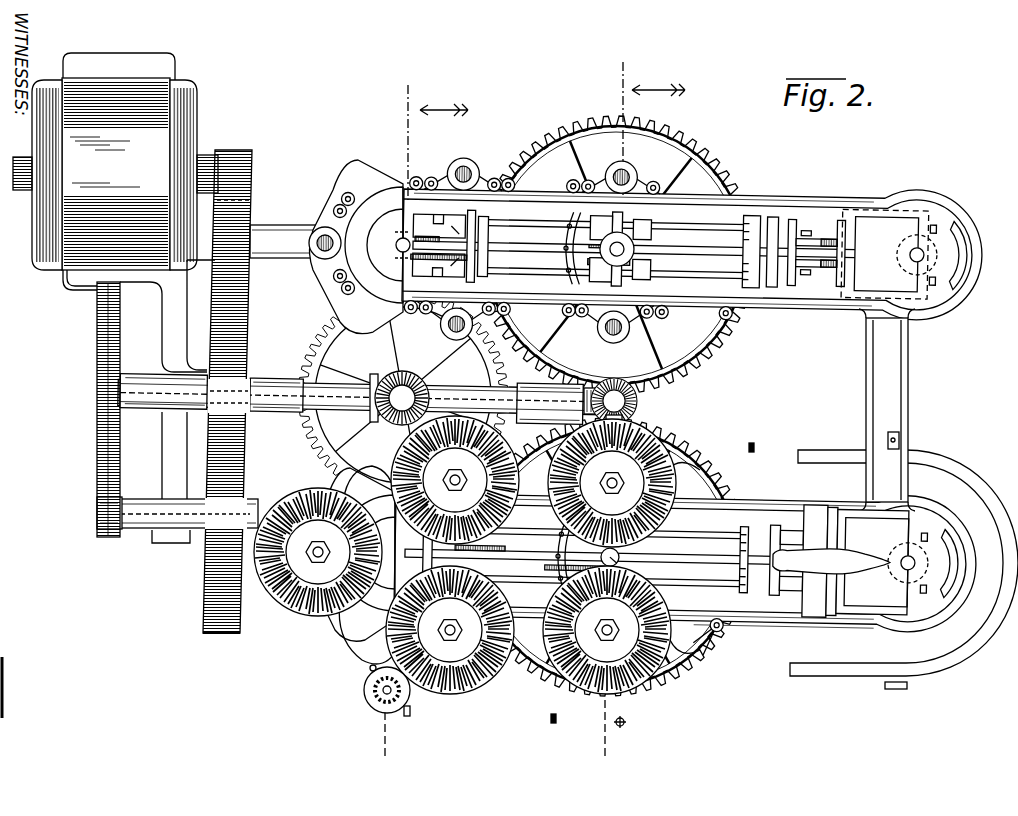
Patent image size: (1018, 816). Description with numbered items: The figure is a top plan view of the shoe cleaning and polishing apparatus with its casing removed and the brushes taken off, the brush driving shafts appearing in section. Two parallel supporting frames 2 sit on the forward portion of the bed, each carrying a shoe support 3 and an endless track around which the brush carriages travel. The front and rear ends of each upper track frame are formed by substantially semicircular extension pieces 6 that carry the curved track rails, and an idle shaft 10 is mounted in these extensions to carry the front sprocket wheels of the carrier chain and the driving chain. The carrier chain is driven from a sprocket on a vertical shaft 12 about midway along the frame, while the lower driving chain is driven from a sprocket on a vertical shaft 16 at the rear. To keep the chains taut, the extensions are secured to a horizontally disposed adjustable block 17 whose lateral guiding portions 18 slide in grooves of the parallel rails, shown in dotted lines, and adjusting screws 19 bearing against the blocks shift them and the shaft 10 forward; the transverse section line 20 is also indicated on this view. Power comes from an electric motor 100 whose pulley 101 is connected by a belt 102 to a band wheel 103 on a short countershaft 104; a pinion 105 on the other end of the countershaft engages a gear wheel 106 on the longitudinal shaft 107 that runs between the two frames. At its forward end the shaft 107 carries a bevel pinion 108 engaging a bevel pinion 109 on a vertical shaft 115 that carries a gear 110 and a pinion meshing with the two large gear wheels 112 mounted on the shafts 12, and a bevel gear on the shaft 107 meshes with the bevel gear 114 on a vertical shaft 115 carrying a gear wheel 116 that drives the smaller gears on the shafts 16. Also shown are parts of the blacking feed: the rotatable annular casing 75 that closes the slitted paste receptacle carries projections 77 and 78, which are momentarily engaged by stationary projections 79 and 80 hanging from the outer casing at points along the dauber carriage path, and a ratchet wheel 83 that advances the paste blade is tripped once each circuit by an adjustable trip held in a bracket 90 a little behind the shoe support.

The supporting frame 2 is at (656, 402).
The shoe support 3 is at (831, 562).
The semicircular extension piece 6 is at (968, 272).
The idle shaft 10 is at (699, 395).
The vertical shaft 12 is at (577, 409).
The vertical shaft 16 is at (422, 553).
The adjustable block 17 is at (904, 420).
The lateral guiding portion 18 is at (927, 375).
The adjusting screw 19 is at (609, 422).
The reference line 20 is at (639, 412).
The annular casing 75 is at (372, 698).
The upwardly extending projection 77 is at (408, 716).
The upwardly extending projection 78 is at (370, 667).
The stationary projection 79 is at (546, 733).
The stationary projection 80 is at (753, 443).
The ratchet wheel 83 is at (408, 696).
The bracket 90 is at (632, 722).
The electric motor 100 is at (68, 232).
The pulley 101 is at (246, 170).
The belt 102 is at (246, 306).
The band wheel 103 is at (205, 598).
The countershaft 104 is at (148, 538).
The pinion 105 is at (98, 528).
The gear wheel 106 is at (98, 430).
The longitudinal shaft 107 is at (287, 411).
The bevel pinion 108 is at (632, 392).
The bevel pinion 109 is at (626, 418).
The bevel gear 110 is at (640, 400).
The large gear wheel 112 is at (698, 134).
The bevel gear 114 is at (345, 320).
The vertical shaft 115 is at (330, 363).
The gear wheel 116 is at (492, 373).